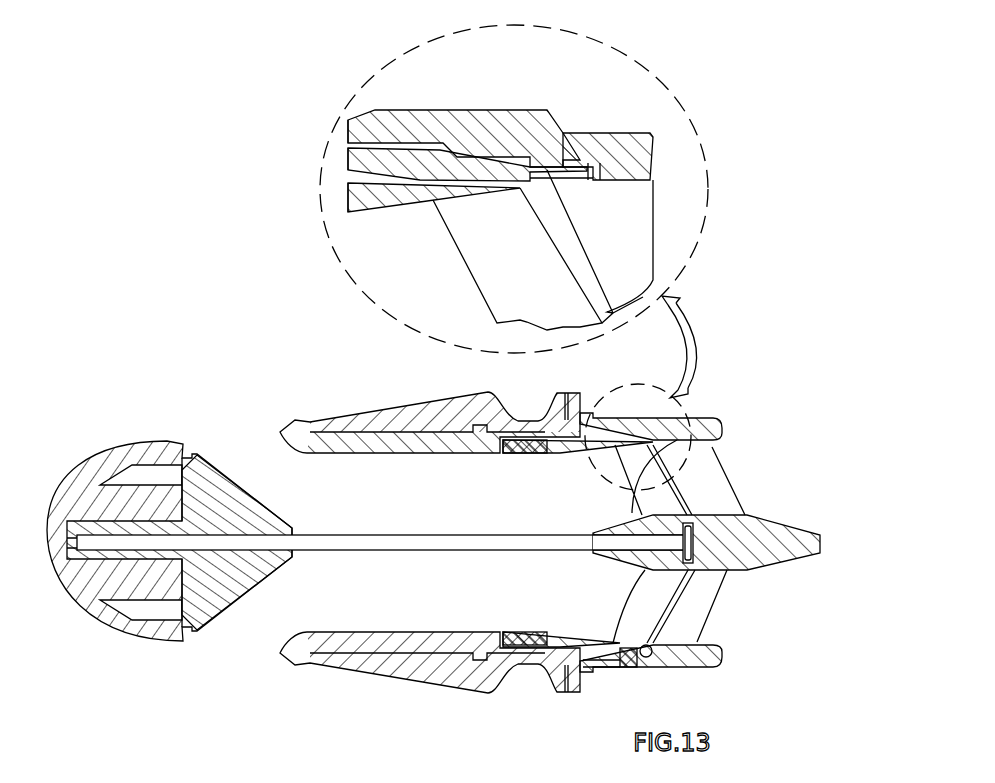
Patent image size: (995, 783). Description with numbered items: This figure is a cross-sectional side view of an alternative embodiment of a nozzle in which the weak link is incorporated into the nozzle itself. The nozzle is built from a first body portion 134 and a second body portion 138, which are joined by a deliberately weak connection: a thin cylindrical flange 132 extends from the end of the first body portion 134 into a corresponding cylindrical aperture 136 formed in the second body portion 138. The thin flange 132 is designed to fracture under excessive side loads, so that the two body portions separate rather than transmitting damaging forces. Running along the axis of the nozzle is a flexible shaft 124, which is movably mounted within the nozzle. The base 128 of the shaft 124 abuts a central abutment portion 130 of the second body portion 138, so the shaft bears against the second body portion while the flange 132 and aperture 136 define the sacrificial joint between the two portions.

The flexible shaft 124 is at (447, 537).
The base of the shaft 128 is at (687, 555).
The central abutment portion 130 is at (773, 555).
The thin cylindrical flange 132 is at (650, 440).
The first body portion 134 is at (542, 418).
The cylindrical aperture 136 is at (724, 428).
The second body portion 138 is at (690, 657).